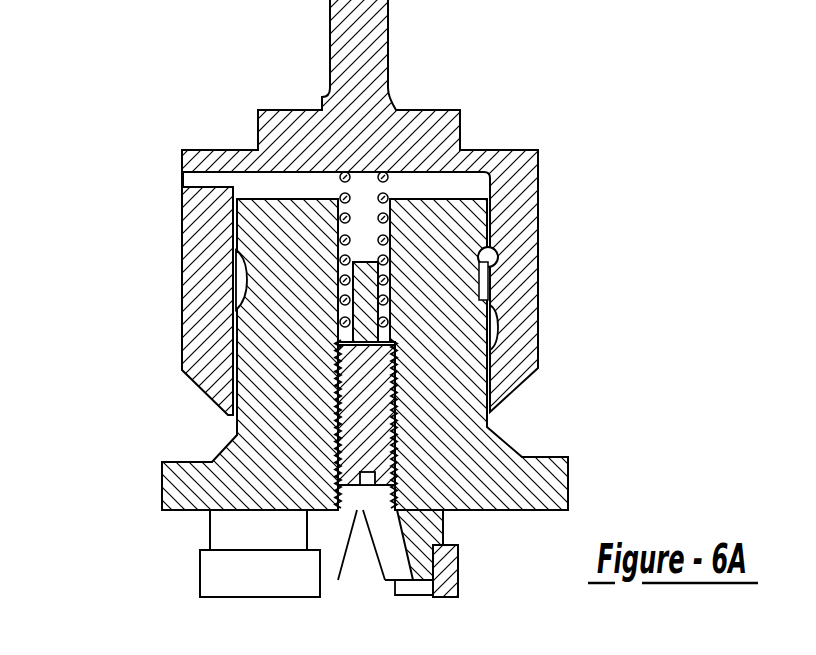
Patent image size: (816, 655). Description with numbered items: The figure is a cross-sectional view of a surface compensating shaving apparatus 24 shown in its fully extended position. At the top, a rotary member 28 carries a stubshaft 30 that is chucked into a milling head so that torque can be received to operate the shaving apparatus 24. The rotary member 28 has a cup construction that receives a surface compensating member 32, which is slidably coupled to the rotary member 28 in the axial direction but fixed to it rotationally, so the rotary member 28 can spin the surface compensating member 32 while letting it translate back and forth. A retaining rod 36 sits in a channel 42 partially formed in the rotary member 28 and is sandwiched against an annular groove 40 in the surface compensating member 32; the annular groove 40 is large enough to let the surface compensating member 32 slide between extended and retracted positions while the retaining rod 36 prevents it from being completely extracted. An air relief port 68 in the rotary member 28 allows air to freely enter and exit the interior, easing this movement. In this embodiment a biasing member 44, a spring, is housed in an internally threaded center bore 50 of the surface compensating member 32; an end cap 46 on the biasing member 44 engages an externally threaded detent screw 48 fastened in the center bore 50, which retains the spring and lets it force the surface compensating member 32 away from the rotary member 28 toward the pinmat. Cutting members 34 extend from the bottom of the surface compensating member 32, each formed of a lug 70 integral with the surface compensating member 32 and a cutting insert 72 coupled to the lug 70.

The shaving apparatus 24 is at (80, 126).
The rotary member 28 is at (255, 88).
The stubshaft 30 is at (329, 66).
The surface compensating member 32 is at (155, 444).
The cutting member 34 is at (195, 537).
The retaining rod 36 is at (503, 303).
The annular groove 40 is at (238, 297).
The channel 42 is at (492, 248).
The biasing member 44 is at (410, 180).
The end cap 46 is at (390, 308).
The detent screw 48 is at (393, 368).
The center bore 50 is at (393, 450).
The air relief port 68 is at (188, 174).
The lug 70 is at (320, 580).
The cutting insert 72 is at (278, 597).